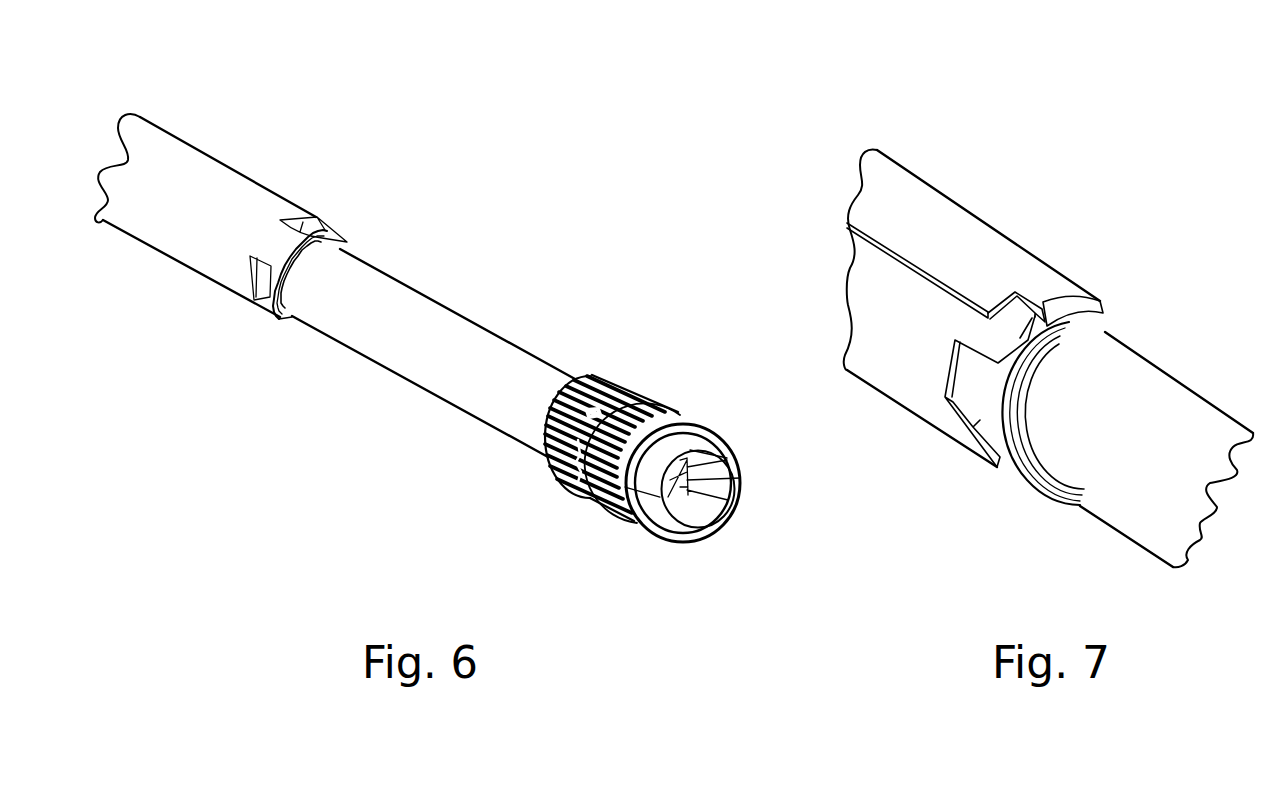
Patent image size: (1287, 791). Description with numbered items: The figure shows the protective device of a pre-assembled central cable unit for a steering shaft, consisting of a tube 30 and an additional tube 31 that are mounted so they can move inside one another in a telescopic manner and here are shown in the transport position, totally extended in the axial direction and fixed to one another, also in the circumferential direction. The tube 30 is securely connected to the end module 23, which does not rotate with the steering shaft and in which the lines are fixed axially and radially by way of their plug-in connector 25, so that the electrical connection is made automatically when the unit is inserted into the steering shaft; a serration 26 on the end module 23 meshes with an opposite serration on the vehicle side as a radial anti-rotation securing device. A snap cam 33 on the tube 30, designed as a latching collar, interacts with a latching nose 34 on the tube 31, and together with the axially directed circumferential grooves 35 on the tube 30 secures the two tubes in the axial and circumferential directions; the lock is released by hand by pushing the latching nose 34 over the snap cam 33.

In FIG. 6, the end module 23 is at (632, 496).
In FIG. 6, the plug-in connector 25 is at (690, 487).
In FIG. 6, the serration 26 is at (573, 477).
In FIG. 6, the tube 30 is at (428, 368).
In FIG. 7, the tube 30 is at (1100, 487).
In FIG. 6, the additional tube 31 is at (176, 240).
In FIG. 7, the additional tube 31 is at (960, 230).
In FIG. 6, the snap cam 33 is at (313, 221).
In FIG. 7, the snap cam 33 is at (1103, 322).
In FIG. 6, the latching nose 34 is at (258, 303).
In FIG. 7, the latching nose 34 is at (1040, 306).
In FIG. 7, the circumferential grooves 35 is at (947, 402).